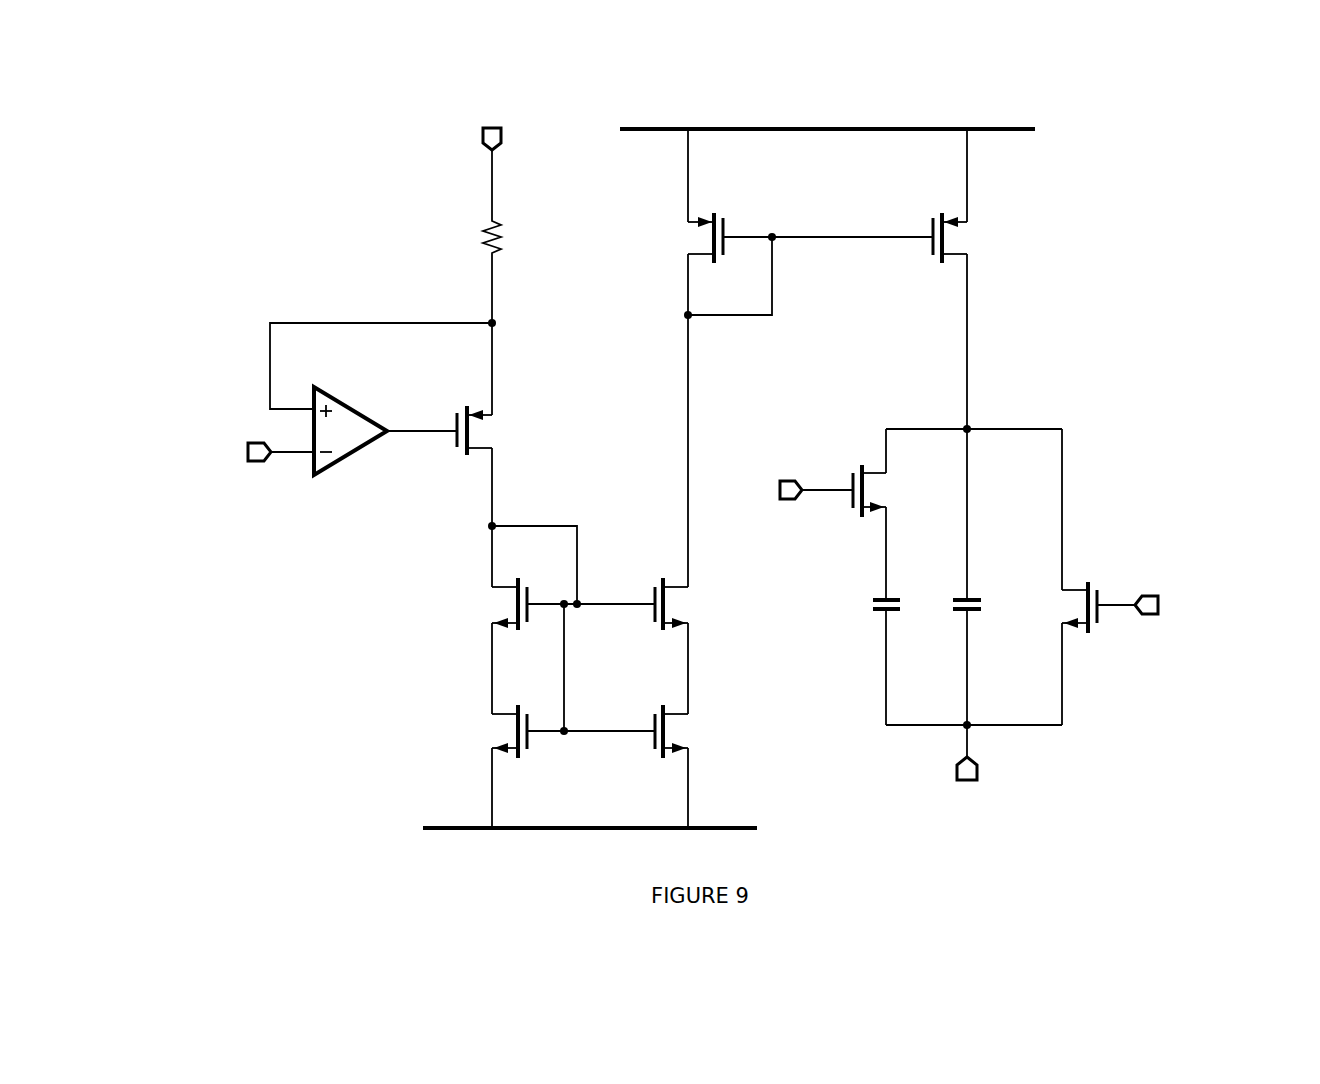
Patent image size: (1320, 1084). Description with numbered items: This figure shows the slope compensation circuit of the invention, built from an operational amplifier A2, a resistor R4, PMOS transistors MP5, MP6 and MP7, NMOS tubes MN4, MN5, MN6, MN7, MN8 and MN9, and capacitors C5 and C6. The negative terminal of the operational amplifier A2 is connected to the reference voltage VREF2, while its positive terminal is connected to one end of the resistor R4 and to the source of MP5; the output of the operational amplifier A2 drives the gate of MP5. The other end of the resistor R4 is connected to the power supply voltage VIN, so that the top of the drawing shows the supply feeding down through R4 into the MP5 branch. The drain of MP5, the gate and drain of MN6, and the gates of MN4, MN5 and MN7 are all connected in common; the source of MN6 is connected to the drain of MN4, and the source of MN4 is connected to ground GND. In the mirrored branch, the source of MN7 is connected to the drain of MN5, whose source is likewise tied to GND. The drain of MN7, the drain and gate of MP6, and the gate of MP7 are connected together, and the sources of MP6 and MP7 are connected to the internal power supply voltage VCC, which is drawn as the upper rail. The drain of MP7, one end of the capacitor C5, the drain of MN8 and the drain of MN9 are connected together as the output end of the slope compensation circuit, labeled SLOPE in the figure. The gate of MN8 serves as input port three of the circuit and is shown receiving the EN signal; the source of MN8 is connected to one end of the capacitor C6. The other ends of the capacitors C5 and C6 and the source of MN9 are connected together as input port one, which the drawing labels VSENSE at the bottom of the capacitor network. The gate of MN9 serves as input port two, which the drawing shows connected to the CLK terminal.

The resistor R4 is at (474, 237).
The operational amplifier A2 is at (385, 431).
The PMOS transistor MP5 is at (489, 430).
The PMOS transistor MP6 is at (683, 222).
The PMOS transistor MP7 is at (970, 196).
The NMOS tube MN4 is at (552, 731).
The NMOS tube MN5 is at (693, 731).
The NMOS tube MN6 is at (552, 604).
The NMOS tube MN7 is at (694, 604).
The NMOS tube MN8 is at (888, 473).
The NMOS tube MN9 is at (1058, 577).
The capacitor C5 is at (951, 659).
The capacitor C6 is at (871, 659).
The power supply voltage VIN is at (493, 155).
The internal power supply voltage VCC is at (827, 111).
The ground rail GND is at (590, 844).
The reference voltage VREF2 is at (249, 452).
The enable terminal EN is at (795, 492).
The slope node SLOPE is at (974, 413).
The clock terminal CLK is at (1154, 605).
The sense voltage terminal VSENSE is at (974, 770).